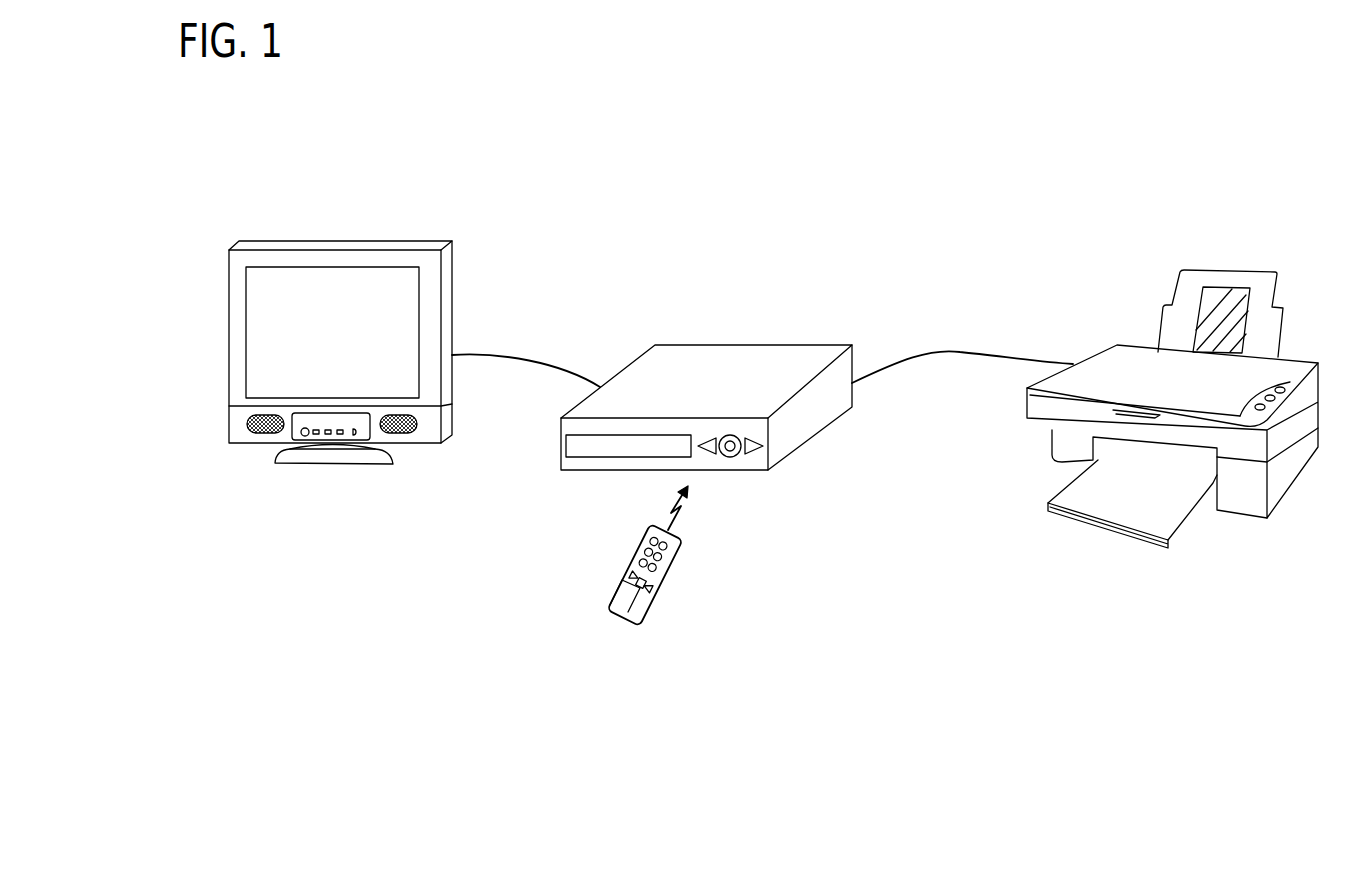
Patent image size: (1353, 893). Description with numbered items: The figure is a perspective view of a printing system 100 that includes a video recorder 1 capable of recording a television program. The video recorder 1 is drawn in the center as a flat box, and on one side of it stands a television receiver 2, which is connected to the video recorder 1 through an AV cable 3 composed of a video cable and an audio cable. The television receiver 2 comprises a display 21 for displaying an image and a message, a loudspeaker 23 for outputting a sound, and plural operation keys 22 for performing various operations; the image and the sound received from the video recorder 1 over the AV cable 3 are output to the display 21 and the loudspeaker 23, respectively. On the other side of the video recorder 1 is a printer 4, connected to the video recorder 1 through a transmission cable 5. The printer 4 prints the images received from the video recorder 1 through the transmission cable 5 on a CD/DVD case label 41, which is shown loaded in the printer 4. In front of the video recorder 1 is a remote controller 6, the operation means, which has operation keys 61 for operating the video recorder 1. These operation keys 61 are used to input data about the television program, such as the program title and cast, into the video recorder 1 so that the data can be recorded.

The printing system 100 is at (822, 93).
The video recorder 1 is at (727, 336).
The television receiver 2 is at (347, 221).
The display 21 is at (278, 309).
The operation keys 22 is at (308, 426).
The loudspeaker 23 is at (390, 436).
The AV cable 3 is at (537, 362).
The printer 4 is at (1120, 337).
The CD/DVD case label 41 is at (1227, 300).
The transmission cable 5 is at (963, 352).
The remote controller 6 is at (690, 593).
The operation keys 61 is at (633, 586).